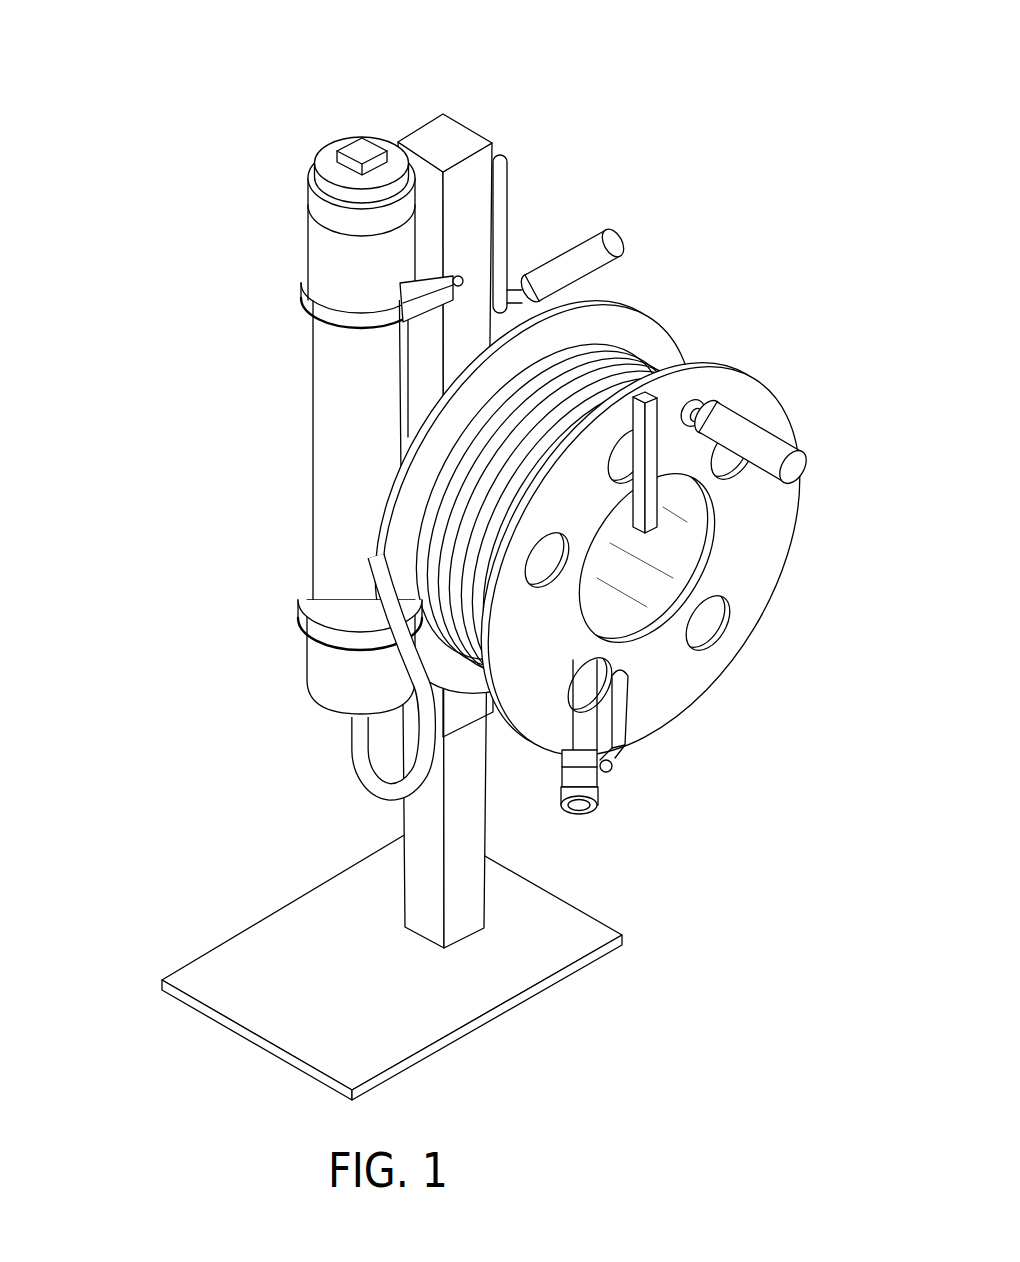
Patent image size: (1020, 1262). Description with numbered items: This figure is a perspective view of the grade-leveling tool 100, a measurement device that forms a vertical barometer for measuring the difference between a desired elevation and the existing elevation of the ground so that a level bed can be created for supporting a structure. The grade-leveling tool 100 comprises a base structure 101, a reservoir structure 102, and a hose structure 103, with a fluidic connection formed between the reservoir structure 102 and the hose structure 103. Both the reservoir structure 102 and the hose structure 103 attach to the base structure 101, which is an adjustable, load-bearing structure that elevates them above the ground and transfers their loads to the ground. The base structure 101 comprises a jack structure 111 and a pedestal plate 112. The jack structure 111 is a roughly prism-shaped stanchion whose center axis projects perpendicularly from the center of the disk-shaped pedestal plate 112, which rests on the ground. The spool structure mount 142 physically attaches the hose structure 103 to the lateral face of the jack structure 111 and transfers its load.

The grade-leveling tool 100 is at (150, 105).
The base structure 101 is at (117, 821).
The jack structure 111 is at (420, 842).
The pedestal plate 112 is at (278, 957).
The reservoir structure 102 is at (340, 410).
The hose structure 103 is at (748, 527).
The spool structure mount 142 is at (654, 412).